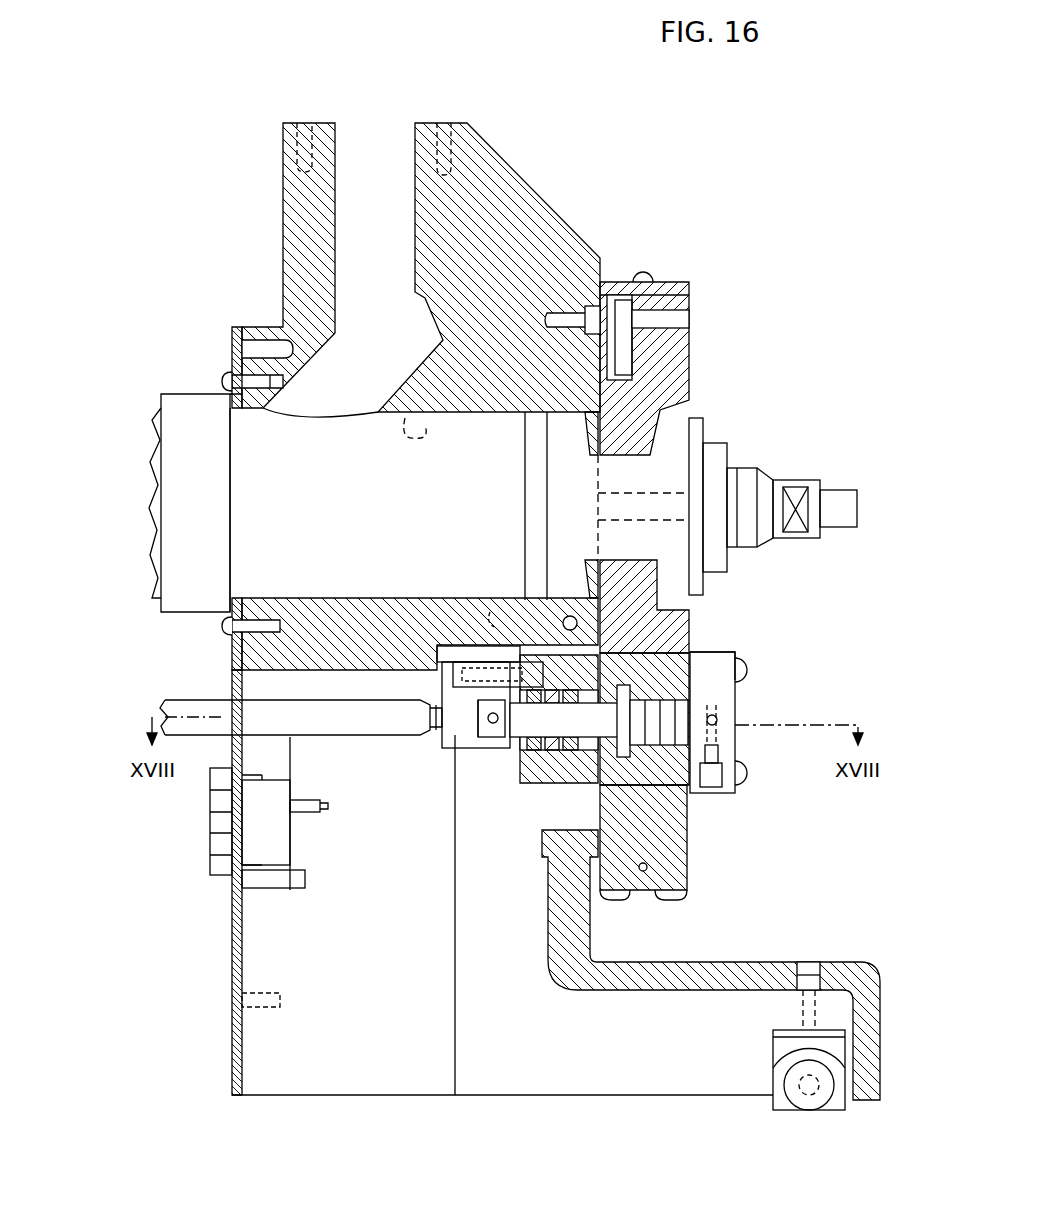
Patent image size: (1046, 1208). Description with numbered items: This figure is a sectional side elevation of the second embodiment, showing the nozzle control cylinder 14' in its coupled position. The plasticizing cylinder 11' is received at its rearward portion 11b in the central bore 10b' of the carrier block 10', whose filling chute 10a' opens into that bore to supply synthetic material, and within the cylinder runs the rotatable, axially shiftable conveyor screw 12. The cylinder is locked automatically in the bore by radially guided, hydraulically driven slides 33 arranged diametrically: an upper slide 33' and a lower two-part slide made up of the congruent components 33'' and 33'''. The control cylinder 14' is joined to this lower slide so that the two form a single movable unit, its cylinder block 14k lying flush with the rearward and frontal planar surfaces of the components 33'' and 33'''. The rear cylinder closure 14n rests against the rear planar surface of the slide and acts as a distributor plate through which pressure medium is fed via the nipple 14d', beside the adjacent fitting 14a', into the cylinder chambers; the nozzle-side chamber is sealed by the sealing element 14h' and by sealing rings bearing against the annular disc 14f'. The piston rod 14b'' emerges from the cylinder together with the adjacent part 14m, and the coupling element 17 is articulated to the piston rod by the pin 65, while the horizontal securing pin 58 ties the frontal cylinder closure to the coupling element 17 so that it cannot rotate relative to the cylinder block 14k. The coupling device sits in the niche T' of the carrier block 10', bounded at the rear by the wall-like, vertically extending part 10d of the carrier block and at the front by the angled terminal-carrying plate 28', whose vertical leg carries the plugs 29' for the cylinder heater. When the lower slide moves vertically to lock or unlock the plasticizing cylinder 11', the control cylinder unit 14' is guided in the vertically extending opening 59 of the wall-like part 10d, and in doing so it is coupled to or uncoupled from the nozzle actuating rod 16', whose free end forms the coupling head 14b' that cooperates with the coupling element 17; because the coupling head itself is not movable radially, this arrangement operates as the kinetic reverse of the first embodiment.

The filling chute 10a' is at (309, 222).
The carrier block 10' is at (489, 237).
The central bore 10b' is at (451, 381).
The bearing ring 33 is at (636, 316).
The slide 33' is at (711, 445).
The conveyor screw 12 is at (828, 508).
The wall-like vertically extending part 10d is at (268, 350).
The housing 11b is at (412, 518).
The plasticizing cylinder 11' is at (189, 437).
The horizontal securing pin 58 is at (498, 650).
The lower two-part slide component 33'' is at (716, 606).
The nozzle control cylinder 14' is at (710, 722).
The rear cylinder closure 14n is at (713, 665).
The bolt head 14a' is at (758, 723).
The nipple 14d' is at (784, 706).
The force-transmitting rod 16' is at (271, 688).
The coupling head 14b' is at (383, 743).
The piston rod 14b'' is at (432, 674).
The sealing element 14h' is at (465, 762).
The coupling element 17 is at (457, 750).
The niche T' is at (442, 741).
The pin 65 is at (493, 727).
The annular disc 14f' is at (549, 738).
The shaft 14m is at (540, 790).
The lower two-part slide component 33''' is at (704, 842).
The cylinder block 14k is at (663, 800).
The terminal-carrying plate 28' is at (458, 711).
The plugs 29' is at (269, 887).
The vertically extending opening 59 is at (570, 812).